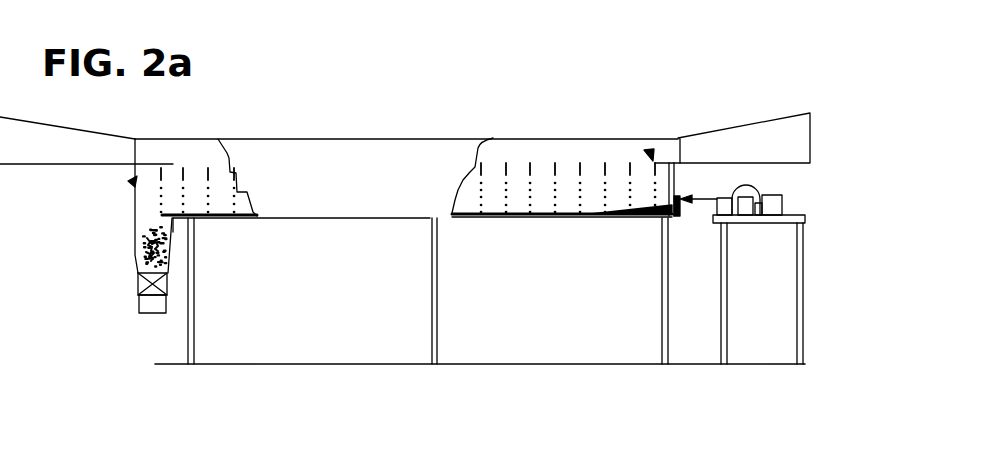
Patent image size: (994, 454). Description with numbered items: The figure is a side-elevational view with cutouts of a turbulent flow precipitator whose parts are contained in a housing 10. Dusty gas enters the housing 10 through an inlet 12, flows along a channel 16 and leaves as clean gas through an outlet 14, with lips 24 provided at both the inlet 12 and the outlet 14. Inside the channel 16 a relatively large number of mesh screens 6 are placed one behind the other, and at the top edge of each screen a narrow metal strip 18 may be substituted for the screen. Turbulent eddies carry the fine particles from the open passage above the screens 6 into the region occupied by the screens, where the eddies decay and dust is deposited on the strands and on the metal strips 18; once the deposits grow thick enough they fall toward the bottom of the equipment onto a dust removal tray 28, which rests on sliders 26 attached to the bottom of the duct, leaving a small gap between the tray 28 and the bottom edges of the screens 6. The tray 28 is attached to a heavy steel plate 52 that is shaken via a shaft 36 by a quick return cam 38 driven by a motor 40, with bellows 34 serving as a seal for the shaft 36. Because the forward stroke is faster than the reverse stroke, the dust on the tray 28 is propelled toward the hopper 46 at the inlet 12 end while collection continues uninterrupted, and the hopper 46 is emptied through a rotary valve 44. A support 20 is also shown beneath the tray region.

The mesh screen 6 is at (532, 216).
The housing 10 is at (333, 135).
The inlet 12 is at (80, 143).
The outlet 14 is at (772, 140).
The channel 16 is at (528, 150).
The metal strip 18 is at (528, 167).
The support plate 20 is at (211, 221).
The lip 24 is at (133, 182).
The slider 26 is at (182, 216).
The dust removal tray 28 is at (502, 216).
The bellows 34 is at (683, 200).
The shaft 36 is at (693, 198).
The quick return cam 38 is at (738, 186).
The motor 40 is at (762, 194).
The rotary valve 44 is at (140, 290).
The hopper 46 is at (143, 259).
The heavy steel plate 52 is at (678, 217).